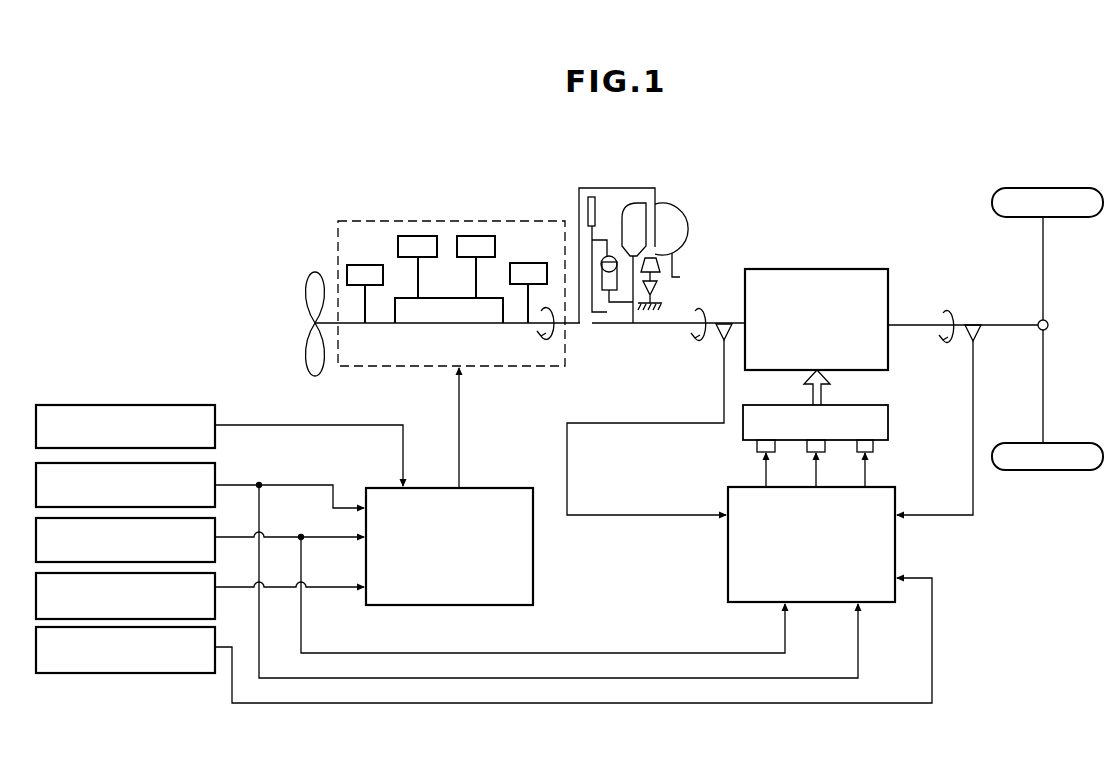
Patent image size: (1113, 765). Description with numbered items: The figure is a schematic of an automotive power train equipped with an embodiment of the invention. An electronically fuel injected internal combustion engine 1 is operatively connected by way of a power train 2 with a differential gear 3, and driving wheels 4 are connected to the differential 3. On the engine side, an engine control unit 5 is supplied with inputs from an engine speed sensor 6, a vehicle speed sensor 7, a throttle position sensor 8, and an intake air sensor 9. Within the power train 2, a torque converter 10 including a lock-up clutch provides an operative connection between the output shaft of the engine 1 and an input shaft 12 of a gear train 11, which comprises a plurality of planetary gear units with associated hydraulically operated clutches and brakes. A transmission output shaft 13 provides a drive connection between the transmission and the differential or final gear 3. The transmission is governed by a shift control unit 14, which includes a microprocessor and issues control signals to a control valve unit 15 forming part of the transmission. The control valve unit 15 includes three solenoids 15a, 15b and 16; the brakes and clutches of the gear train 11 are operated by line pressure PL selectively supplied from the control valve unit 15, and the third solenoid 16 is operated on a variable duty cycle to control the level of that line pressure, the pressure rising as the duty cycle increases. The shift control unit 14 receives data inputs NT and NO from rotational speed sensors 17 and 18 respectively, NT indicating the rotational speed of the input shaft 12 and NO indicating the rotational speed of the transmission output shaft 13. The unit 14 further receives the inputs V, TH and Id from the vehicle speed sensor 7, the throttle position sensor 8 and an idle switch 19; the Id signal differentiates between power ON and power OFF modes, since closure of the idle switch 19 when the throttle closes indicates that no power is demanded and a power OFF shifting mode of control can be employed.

The internal combustion engine 1 is at (377, 221).
The power train 2 is at (756, 246).
The differential gear 3 is at (1047, 320).
The driving wheels 4 is at (1043, 188).
The engine control unit 5 is at (425, 605).
The engine speed sensor 6 is at (218, 589).
The vehicle speed sensor 7 is at (218, 533).
The throttle position sensor 8 is at (218, 478).
The intake air sensor 9 is at (190, 405).
The torque converter 10 is at (672, 202).
The gear train 11 is at (860, 269).
The input shaft 12 is at (654, 327).
The transmission output shaft 13 is at (912, 325).
The shift control unit 14 is at (897, 557).
The control valve unit 15 is at (890, 415).
The solenoid 15a is at (875, 452).
The solenoid 15b is at (808, 452).
The third solenoid 16 is at (757, 449).
The rotational speed sensor 17 is at (716, 342).
The rotational speed sensor 18 is at (981, 342).
The idle switch 19 is at (182, 673).